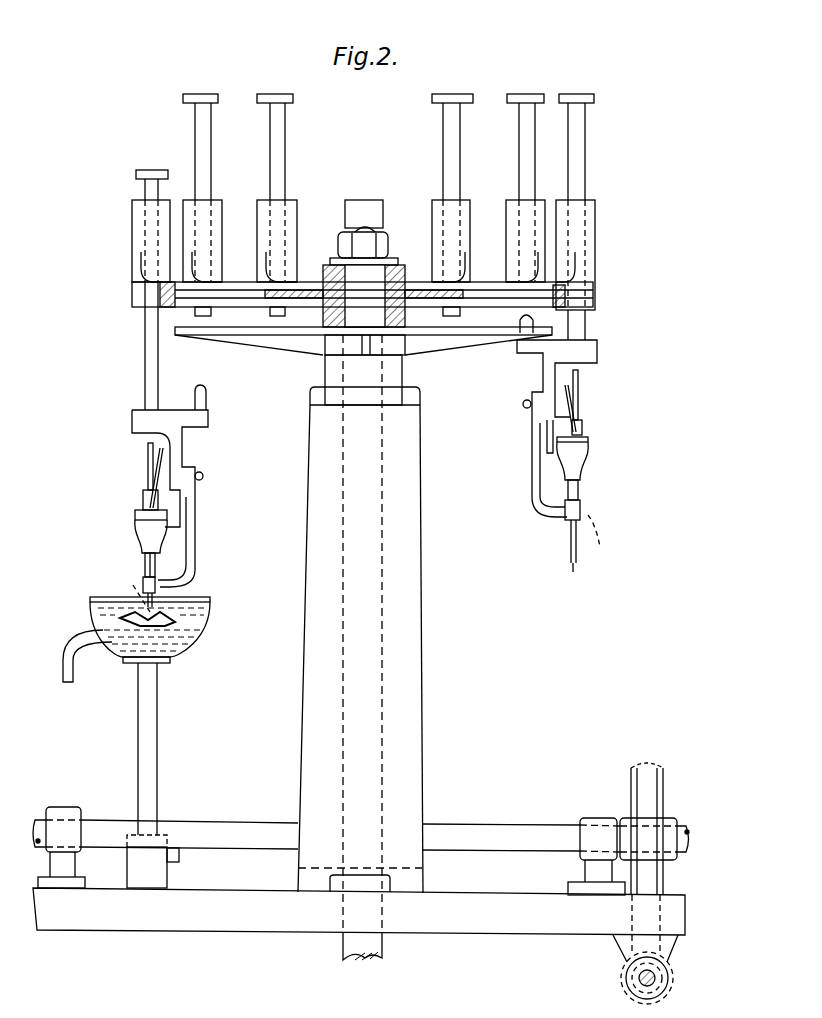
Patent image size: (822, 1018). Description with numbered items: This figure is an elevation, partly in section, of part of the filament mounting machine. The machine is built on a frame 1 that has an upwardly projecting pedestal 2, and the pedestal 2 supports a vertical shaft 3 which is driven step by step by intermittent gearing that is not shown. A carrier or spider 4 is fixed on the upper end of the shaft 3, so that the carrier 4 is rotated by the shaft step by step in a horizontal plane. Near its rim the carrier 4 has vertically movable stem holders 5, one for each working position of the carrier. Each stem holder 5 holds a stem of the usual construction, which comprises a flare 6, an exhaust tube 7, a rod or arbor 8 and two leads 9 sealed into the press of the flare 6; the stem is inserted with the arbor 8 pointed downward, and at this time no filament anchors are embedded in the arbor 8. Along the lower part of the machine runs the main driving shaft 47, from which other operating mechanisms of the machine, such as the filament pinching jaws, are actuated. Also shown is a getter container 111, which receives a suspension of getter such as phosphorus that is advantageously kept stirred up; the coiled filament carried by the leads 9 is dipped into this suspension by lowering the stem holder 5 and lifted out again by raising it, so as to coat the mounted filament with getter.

The frame 1 is at (492, 930).
The pedestal 2 is at (423, 536).
The vertical shaft 3 is at (383, 618).
The carrier or spider 4 is at (421, 292).
The stem holder 5 is at (208, 419).
The flare 6 is at (140, 536).
The exhaust tube 7 is at (148, 462).
The rod or arbor 8 is at (572, 545).
The leads 9 is at (608, 519).
The main driving shaft 47 is at (503, 826).
The getter container 111 is at (210, 604).